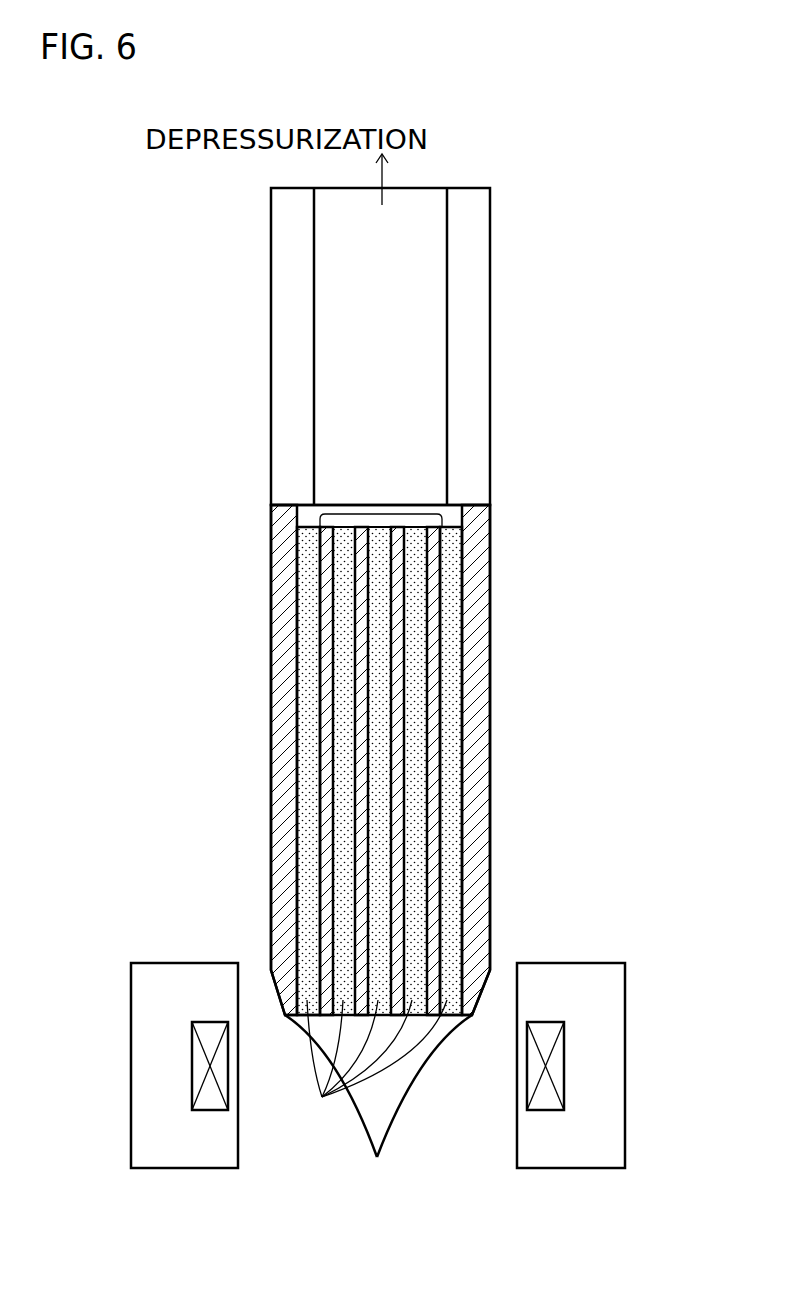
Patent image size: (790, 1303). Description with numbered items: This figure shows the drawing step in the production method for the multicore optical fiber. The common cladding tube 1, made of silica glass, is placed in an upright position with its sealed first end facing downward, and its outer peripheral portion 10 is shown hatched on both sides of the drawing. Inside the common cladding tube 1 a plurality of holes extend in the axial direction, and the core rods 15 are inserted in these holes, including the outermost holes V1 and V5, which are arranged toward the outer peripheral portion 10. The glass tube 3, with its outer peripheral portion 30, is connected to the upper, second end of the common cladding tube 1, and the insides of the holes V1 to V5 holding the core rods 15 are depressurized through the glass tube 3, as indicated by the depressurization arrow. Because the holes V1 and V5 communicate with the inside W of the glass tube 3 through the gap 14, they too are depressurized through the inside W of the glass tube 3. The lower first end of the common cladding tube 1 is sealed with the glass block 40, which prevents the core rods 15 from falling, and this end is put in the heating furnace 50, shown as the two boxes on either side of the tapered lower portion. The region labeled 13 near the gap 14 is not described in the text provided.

The common cladding tube 1 is at (383, 725).
The glass tube 3 is at (252, 238).
The outer peripheral portion 10 is at (271, 683).
The manifold chamber 13 is at (378, 512).
The gap 14 is at (310, 518).
The core rods 15 is at (377, 1064).
The outer peripheral portion 30 is at (271, 320).
The glass block 40 is at (405, 1086).
The heating furnace 50 is at (183, 963).
The hole V1 is at (300, 777).
The hole V5 is at (458, 778).
The inside of the glass tube W is at (420, 207).